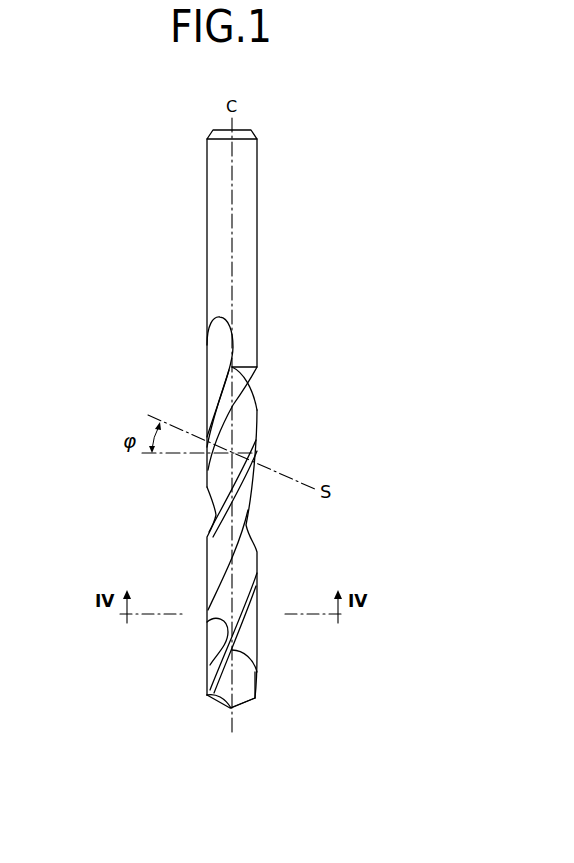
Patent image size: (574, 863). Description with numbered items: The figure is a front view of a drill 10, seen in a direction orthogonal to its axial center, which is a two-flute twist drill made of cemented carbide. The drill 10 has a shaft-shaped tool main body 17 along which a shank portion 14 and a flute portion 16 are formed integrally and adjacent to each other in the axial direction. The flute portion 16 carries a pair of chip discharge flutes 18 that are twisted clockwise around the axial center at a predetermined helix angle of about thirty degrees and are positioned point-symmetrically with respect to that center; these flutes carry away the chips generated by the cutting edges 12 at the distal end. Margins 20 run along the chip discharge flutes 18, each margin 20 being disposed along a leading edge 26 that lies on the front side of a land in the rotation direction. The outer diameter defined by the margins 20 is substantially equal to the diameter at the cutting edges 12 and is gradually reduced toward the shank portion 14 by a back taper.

The drill 10 is at (258, 124).
The cutting edge 12 is at (250, 700).
The shank portion 14 is at (202, 190).
The flute portion 16 is at (177, 690).
The tool main body 17 is at (218, 237).
The chip discharge flute 18 is at (243, 425).
The margin 20 is at (228, 497).
The leading edge 26 is at (218, 620).